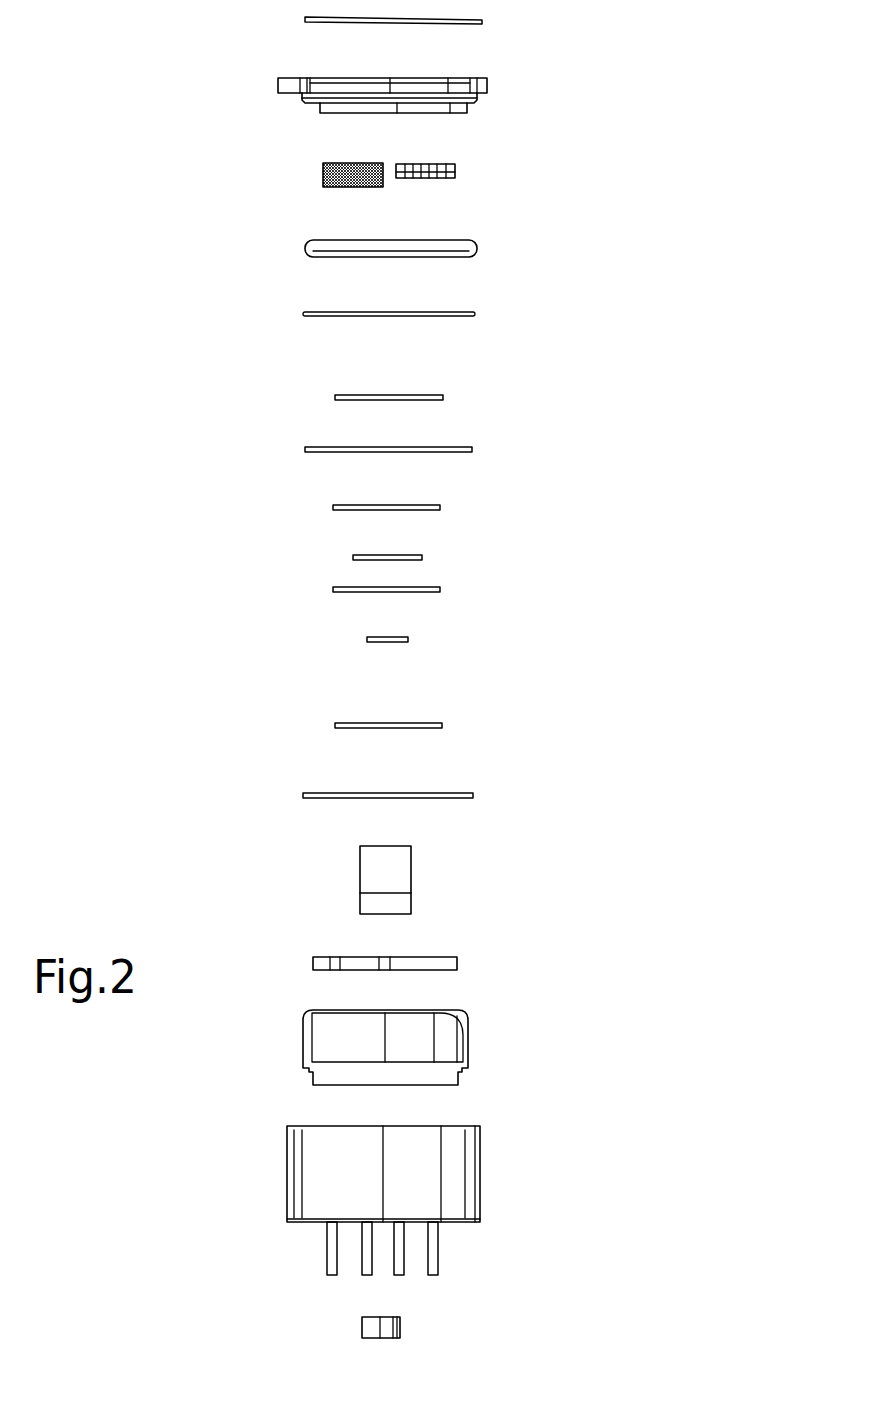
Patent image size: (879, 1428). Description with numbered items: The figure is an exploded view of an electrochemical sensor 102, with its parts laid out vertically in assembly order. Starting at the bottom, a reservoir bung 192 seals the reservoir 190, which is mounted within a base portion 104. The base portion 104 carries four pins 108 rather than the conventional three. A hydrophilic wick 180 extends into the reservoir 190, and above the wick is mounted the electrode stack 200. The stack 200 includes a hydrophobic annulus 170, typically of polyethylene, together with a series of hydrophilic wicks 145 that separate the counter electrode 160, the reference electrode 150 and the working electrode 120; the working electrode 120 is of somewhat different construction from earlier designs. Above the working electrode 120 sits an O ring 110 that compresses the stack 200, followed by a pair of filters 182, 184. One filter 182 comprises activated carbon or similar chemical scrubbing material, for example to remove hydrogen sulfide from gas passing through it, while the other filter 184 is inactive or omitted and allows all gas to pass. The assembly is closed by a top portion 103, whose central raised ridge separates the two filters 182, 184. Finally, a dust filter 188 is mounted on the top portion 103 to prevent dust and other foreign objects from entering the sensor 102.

The sensor 102 is at (680, 588).
The top portion 103 is at (487, 92).
The base portion 104 is at (480, 1166).
The pins 108 is at (327, 1244).
The O ring 110 is at (305, 249).
The working electrode 120 is at (171, 236).
The hydrophilic wicks 145 is at (443, 401).
The reference electrode 150 is at (353, 558).
The counter electrode 160 is at (367, 640).
The hydrophobic annulus 170 is at (305, 449).
The hydrophilic wick 180 is at (411, 873).
The filter 182 is at (323, 178).
The filter 184 is at (455, 175).
The dust filter 188 is at (303, 21).
The reservoir 190 is at (303, 1043).
The reservoir bung 192 is at (400, 1327).
The electrode stack 200 is at (70, 236).